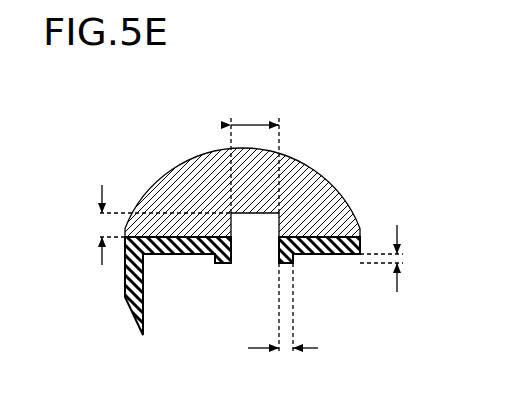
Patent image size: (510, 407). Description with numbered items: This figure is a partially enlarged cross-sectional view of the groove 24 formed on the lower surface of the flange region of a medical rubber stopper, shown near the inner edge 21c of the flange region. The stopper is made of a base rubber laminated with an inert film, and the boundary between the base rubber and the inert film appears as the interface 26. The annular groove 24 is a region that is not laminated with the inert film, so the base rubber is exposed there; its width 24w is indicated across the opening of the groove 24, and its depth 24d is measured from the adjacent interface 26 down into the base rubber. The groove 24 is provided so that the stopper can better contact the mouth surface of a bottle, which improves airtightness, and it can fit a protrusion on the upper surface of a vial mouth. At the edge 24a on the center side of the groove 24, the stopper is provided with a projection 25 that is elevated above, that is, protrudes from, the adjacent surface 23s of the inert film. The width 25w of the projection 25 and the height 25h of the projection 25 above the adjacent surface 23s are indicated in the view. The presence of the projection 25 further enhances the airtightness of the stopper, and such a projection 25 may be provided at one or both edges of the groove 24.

The inner edge of the flange region 21c is at (160, 220).
The interface 26 is at (200, 220).
The groove 24 is at (252, 227).
The edge of the groove 24a is at (318, 236).
The width of the groove 24w is at (256, 152).
The depth of the groove 24d is at (137, 225).
The projection 25 is at (283, 264).
The width of the projection 25w is at (283, 326).
The height of the projection 25h is at (409, 258).
The adjacent surface of the inert film 23s is at (330, 255).